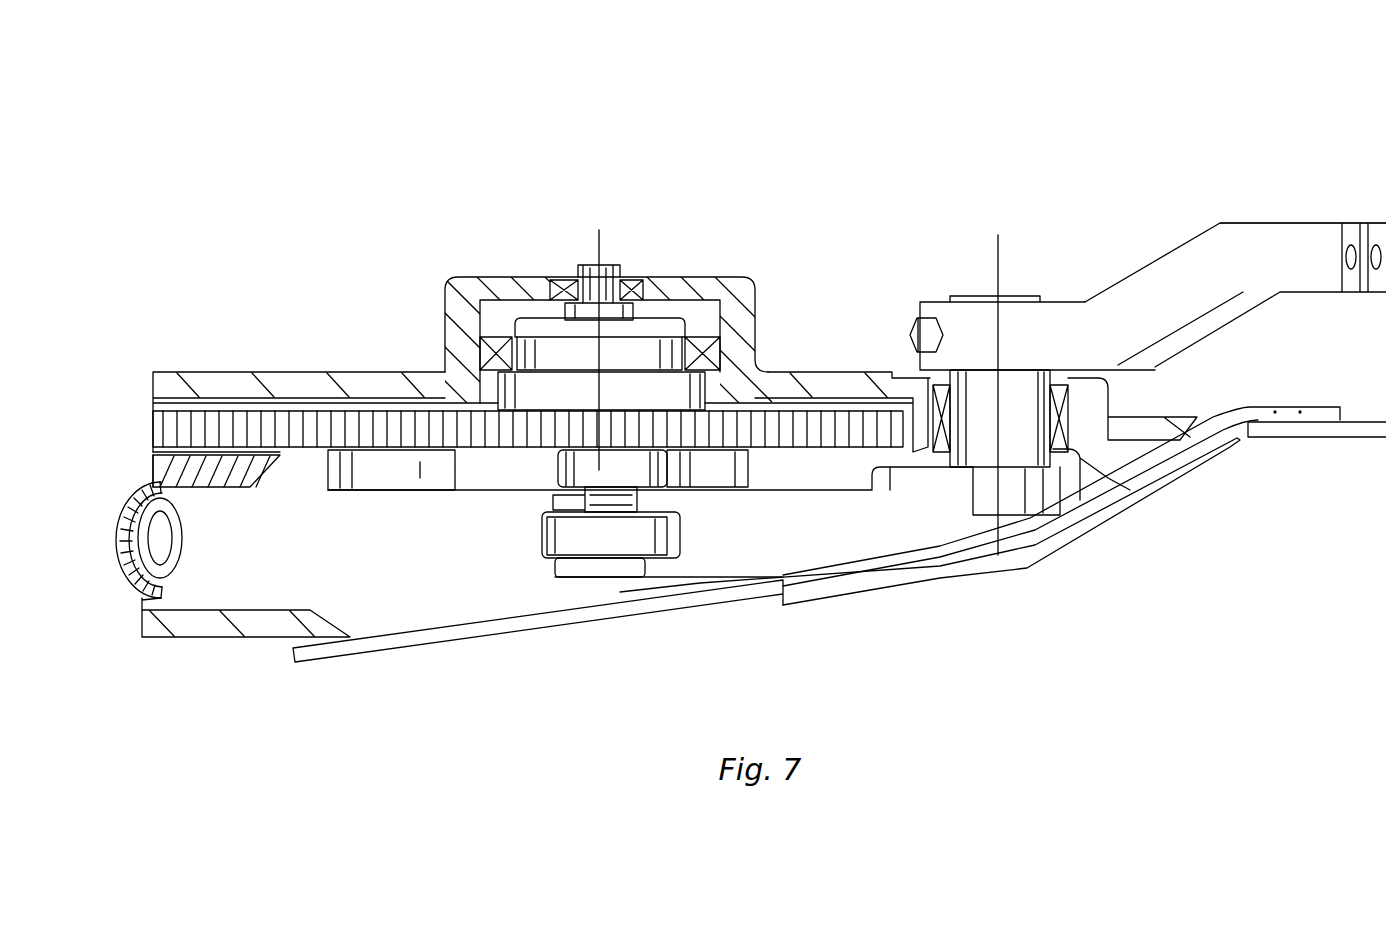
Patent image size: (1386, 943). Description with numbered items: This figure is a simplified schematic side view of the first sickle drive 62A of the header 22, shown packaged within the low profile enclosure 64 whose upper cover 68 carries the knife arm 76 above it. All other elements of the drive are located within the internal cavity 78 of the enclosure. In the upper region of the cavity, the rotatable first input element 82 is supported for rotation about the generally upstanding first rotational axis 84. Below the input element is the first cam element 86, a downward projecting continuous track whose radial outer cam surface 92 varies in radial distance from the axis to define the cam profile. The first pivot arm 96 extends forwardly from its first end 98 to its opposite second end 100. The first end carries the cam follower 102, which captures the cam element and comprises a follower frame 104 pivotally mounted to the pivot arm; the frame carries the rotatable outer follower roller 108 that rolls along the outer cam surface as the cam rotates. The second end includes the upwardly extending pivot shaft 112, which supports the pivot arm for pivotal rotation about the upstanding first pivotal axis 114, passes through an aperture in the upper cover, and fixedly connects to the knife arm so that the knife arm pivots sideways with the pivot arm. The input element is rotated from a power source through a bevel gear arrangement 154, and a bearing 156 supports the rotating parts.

The header 22 is at (1201, 125).
The first sickle drive 62A is at (1263, 211).
The enclosure 64 is at (285, 368).
The upper cover 68 is at (822, 370).
The knife arm 76 is at (1068, 300).
The internal cavity 78 is at (402, 600).
The first input element 82 is at (440, 450).
The first rotational axis 84 is at (603, 243).
The first cam element 86 is at (323, 472).
The radial outer cam surface 92 is at (216, 471).
The first pivot arm 96 is at (707, 578).
The first end 98 is at (657, 580).
The second end 100 is at (948, 545).
The cam follower 102 is at (540, 538).
The follower frame 104 is at (600, 567).
The outer follower roller 108 is at (560, 462).
The pivot shaft 112 is at (1112, 478).
The first pivotal axis 114 is at (992, 263).
The bevel gear arrangement 154 is at (288, 463).
The bearing 156 is at (563, 276).